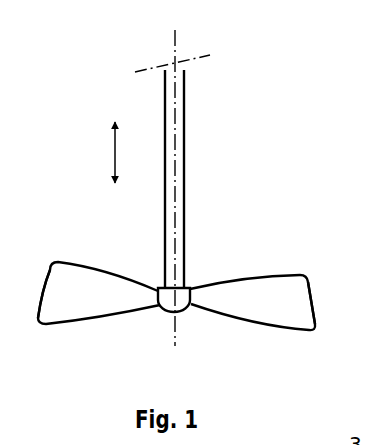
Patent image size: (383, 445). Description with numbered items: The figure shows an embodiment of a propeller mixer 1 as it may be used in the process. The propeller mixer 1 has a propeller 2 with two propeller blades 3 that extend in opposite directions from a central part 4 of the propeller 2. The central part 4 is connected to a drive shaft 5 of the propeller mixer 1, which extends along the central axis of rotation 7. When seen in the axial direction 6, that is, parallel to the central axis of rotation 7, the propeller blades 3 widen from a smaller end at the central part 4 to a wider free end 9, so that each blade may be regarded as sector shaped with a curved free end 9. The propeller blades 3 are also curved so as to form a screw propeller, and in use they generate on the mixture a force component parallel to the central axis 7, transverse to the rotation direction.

The propeller mixer 1 is at (183, 193).
The propeller 2 is at (183, 287).
The propeller blades 3 is at (77, 313).
The central part 4 is at (193, 326).
The drive shaft 5 is at (183, 167).
The axial direction 6 is at (115, 148).
The central axis of rotation 7 is at (175, 32).
The free end 9 is at (42, 292).